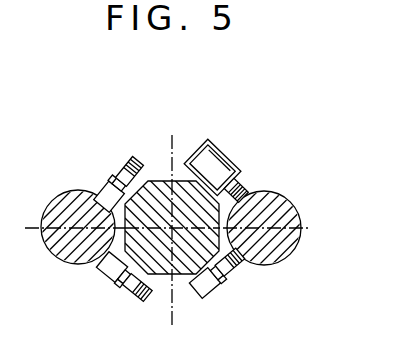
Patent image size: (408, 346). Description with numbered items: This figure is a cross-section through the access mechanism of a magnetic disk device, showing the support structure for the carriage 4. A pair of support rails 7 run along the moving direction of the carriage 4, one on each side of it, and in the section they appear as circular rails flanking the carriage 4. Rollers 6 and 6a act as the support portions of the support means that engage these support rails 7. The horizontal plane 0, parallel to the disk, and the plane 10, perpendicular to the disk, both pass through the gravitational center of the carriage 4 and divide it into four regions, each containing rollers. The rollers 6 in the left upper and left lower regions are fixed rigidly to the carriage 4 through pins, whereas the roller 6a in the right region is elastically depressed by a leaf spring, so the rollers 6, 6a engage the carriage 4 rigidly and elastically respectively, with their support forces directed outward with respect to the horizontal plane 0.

The horizontal plane 0 is at (38, 231).
The plane perpendicular to the disk 10 is at (176, 141).
The support rail 7 is at (75, 190).
The carriage 4 is at (156, 276).
The roller 6 is at (133, 153).
The roller 6a is at (241, 176).